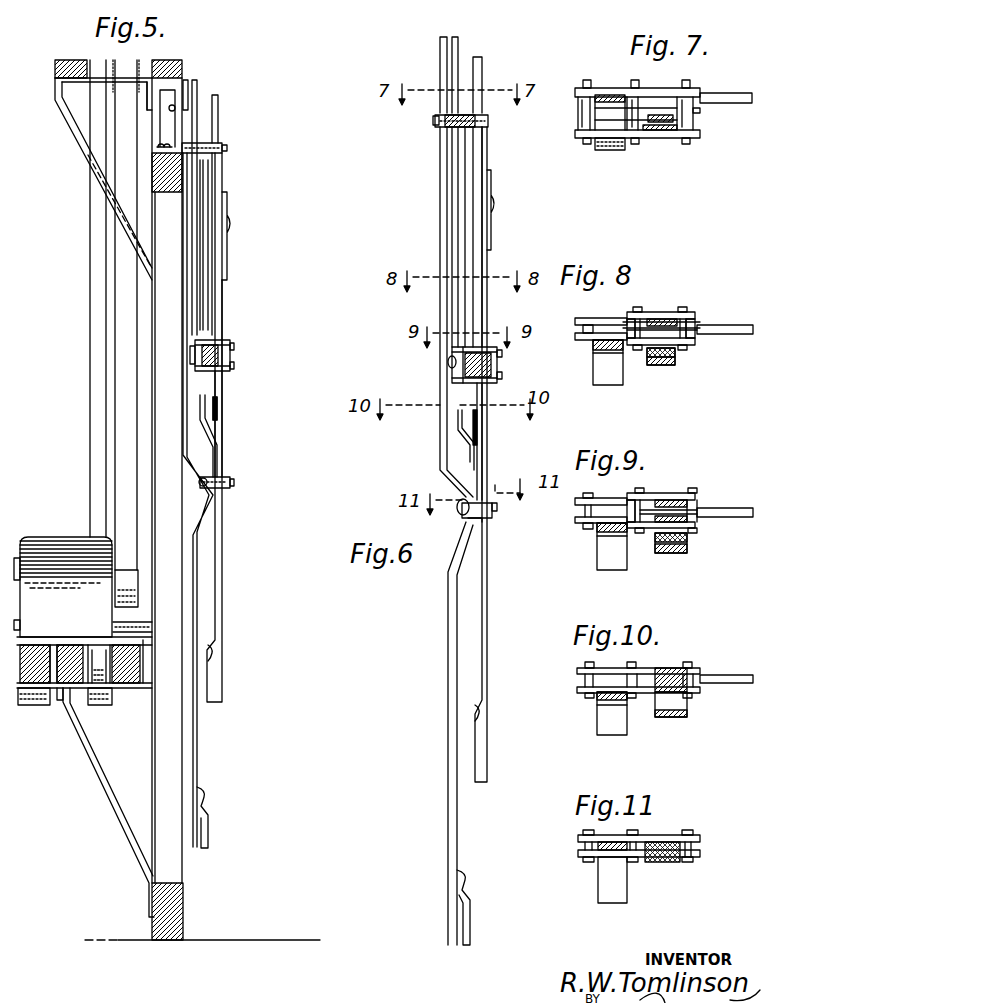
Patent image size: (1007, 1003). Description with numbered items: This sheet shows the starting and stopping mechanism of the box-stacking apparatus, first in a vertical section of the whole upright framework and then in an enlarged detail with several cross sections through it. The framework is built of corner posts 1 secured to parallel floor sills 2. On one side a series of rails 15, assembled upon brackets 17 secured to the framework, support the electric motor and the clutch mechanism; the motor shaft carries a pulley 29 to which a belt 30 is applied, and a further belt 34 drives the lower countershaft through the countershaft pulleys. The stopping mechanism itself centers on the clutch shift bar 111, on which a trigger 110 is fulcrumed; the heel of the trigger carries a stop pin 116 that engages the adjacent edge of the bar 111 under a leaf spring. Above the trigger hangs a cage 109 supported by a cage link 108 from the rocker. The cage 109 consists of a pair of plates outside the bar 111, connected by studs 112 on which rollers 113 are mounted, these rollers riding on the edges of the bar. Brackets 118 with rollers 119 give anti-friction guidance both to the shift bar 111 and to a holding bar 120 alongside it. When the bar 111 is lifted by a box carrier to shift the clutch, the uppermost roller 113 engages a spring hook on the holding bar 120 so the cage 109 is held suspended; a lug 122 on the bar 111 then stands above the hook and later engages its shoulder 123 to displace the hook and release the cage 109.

In FIG. 5, the corner posts 1 is at (155, 393).
In FIG. 5, the floor sills 2 is at (160, 903).
In FIG. 5, the rails 15 is at (100, 705).
In FIG. 5, the brackets 17 is at (102, 785).
In FIG. 5, the pulley 29 is at (112, 596).
In FIG. 5, the belt 30 is at (125, 487).
In FIG. 5, the belt 34 is at (97, 463).
In FIG. 5, the cage link 108 is at (197, 127).
In FIG. 6, the cage link 108 is at (458, 187).
In FIG. 7, the cage link 108 is at (677, 120).
In FIG. 8, the cage link 108 is at (652, 365).
In FIG. 9, the cage link 108 is at (677, 540).
In FIG. 5, the cage 109 is at (230, 358).
In FIG. 6, the cage 109 is at (462, 375).
In FIG. 8, the cage 109 is at (695, 315).
In FIG. 9, the cage 109 is at (700, 497).
In FIG. 5, the trigger 110 is at (217, 408).
In FIG. 6, the trigger 110 is at (478, 422).
In FIG. 7, the trigger 110 is at (738, 98).
In FIG. 8, the trigger 110 is at (700, 334).
In FIG. 9, the trigger 110 is at (745, 493).
In FIG. 10, the trigger 110 is at (750, 663).
In FIG. 5, the clutch shift bar 111 is at (222, 177).
In FIG. 6, the clutch shift bar 111 is at (502, 136).
In FIG. 8, the clutch shift bar 111 is at (663, 322).
In FIG. 9, the clutch shift bar 111 is at (668, 480).
In FIG. 10, the clutch shift bar 111 is at (663, 670).
In FIG. 8, the studs 112 is at (697, 340).
In FIG. 5, the rollers 113 is at (213, 343).
In FIG. 6, the rollers 113 is at (463, 343).
In FIG. 8, the rollers 113 is at (697, 333).
In FIG. 9, the rollers 113 is at (640, 505).
In FIG. 10, the stop pin 116 is at (655, 675).
In FIG. 5, the brackets 118 is at (222, 147).
In FIG. 6, the brackets 118 is at (440, 127).
In FIG. 7, the brackets 118 is at (667, 138).
In FIG. 8, the brackets 118 is at (578, 338).
In FIG. 11, the brackets 118 is at (578, 856).
In FIG. 6, the rollers 119 is at (463, 118).
In FIG. 7, the rollers 119 is at (577, 127).
In FIG. 8, the rollers 119 is at (578, 322).
In FIG. 9, the rollers 119 is at (578, 515).
In FIG. 11, the rollers 119 is at (578, 845).
In FIG. 5, the holding bar 120 is at (218, 98).
In FIG. 6, the holding bar 120 is at (408, 712).
In FIG. 7, the holding bar 120 is at (610, 97).
In FIG. 8, the holding bar 120 is at (610, 377).
In FIG. 9, the holding bar 120 is at (600, 555).
In FIG. 10, the holding bar 120 is at (598, 725).
In FIG. 11, the holding bar 120 is at (600, 893).
In FIG. 8, the lug 122 is at (627, 320).
In FIG. 5, the shoulder 123 is at (227, 227).
In FIG. 6, the shoulder 123 is at (490, 213).